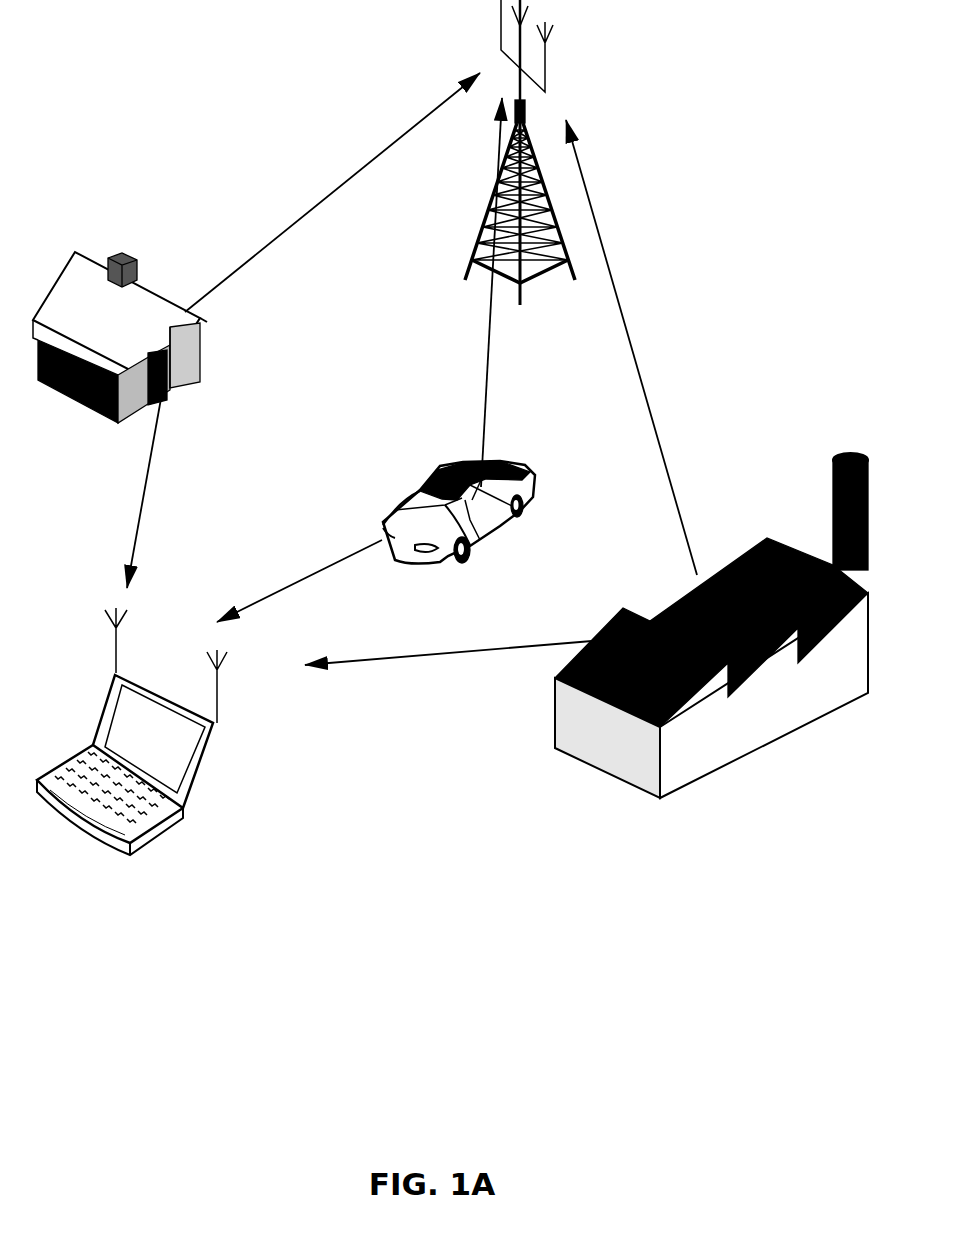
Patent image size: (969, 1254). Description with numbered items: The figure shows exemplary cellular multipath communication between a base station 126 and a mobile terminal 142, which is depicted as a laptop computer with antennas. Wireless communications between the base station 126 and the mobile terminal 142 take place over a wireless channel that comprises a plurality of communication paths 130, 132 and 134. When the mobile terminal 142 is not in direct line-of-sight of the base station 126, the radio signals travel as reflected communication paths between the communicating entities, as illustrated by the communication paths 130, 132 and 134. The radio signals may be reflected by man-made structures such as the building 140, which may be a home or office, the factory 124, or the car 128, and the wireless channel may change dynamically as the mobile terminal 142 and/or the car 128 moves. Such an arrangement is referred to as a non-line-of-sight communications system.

The factory 124 is at (677, 788).
The base station 126 is at (520, 300).
The car 128 is at (462, 562).
The communication path 130 is at (265, 250).
The communication path 132 is at (485, 408).
The communication path 134 is at (642, 378).
The building 140 is at (77, 252).
The mobile terminal 142 is at (208, 750).